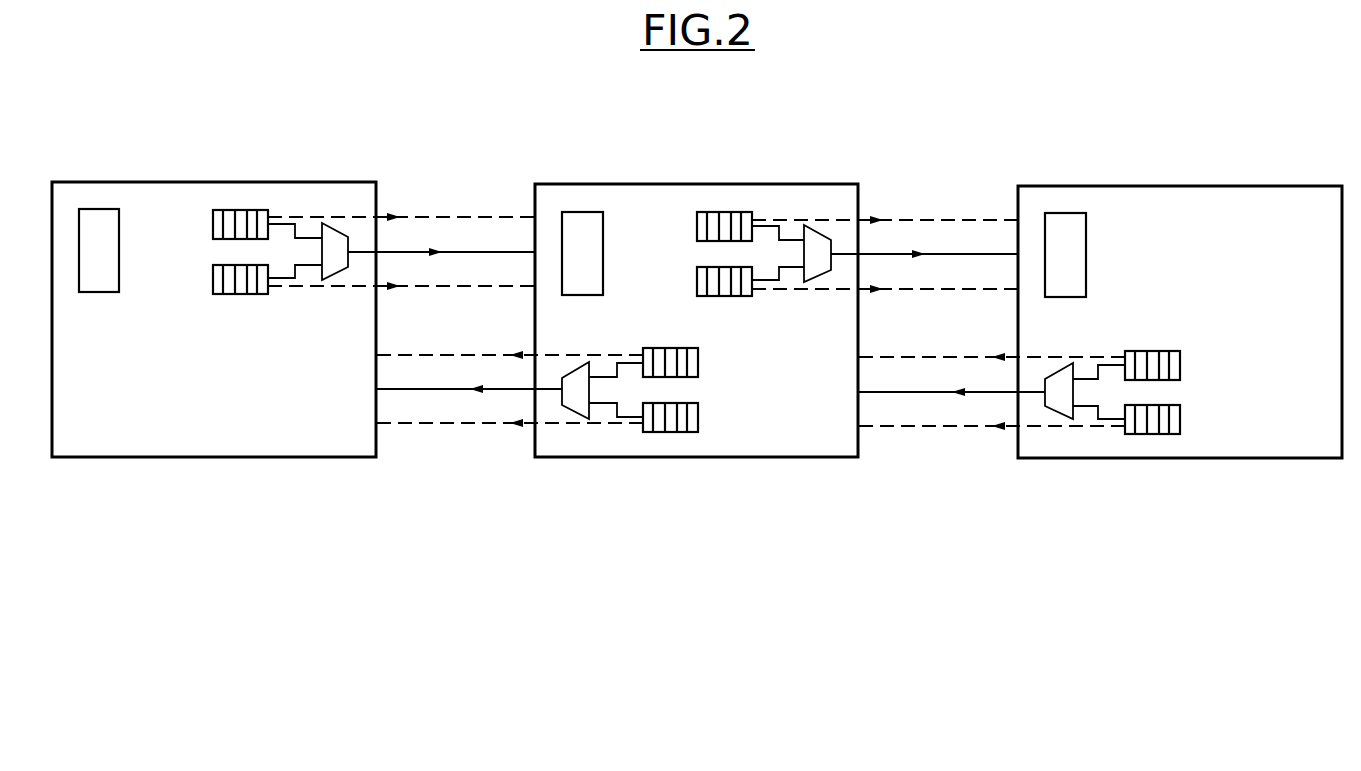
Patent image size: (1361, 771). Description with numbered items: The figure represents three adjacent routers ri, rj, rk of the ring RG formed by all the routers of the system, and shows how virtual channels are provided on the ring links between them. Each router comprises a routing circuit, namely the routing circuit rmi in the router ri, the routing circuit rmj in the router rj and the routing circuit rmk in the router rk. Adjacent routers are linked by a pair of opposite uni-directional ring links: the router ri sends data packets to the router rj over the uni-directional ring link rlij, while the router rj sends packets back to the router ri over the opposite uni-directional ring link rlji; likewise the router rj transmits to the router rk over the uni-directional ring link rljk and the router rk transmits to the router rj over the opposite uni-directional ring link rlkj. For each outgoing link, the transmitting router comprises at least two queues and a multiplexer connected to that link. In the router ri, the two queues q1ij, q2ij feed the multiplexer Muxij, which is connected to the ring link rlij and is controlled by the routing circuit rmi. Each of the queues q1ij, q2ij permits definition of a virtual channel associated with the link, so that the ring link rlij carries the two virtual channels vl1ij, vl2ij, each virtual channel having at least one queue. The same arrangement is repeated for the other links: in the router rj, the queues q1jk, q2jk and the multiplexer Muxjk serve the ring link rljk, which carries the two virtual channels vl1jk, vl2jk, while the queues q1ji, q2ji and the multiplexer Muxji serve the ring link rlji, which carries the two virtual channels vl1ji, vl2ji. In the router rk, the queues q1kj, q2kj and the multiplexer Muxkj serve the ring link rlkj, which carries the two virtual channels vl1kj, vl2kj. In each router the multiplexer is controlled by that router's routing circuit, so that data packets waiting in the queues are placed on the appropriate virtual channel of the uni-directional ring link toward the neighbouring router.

The router ri is at (215, 181).
The router rj is at (697, 183).
The router rk is at (1180, 186).
The routing circuit rmi is at (120, 237).
The routing circuit rmj is at (604, 240).
The routing circuit rmk is at (1087, 245).
The queue q1ij is at (212, 223).
The queue q2ij is at (212, 280).
The multiplexer Muxij is at (329, 224).
The virtual channel vl1ij is at (405, 218).
The virtual channel vl2ij is at (512, 288).
The uni-directional ring link rlij is at (460, 255).
The queue q1jk is at (696, 226).
The queue q2jk is at (696, 283).
The multiplexer Muxjk is at (814, 225).
The virtual channel vl1jk is at (888, 220).
The virtual channel vl2jk is at (993, 290).
The uni-directional ring link rljk is at (943, 257).
The queue q1ji is at (698, 363).
The queue q2ji is at (698, 418).
The multiplexer Muxji is at (574, 419).
The virtual channel vl1ji is at (405, 354).
The virtual channel vl2ji is at (510, 426).
The uni-directional ring link rlji is at (460, 392).
The queue q1kj is at (1181, 366).
The queue q2kj is at (1181, 420).
The multiplexer Muxkj is at (1056, 419).
The virtual channel vl1kj is at (888, 356).
The virtual channel vl2kj is at (992, 428).
The uni-directional ring link rlkj is at (943, 393).